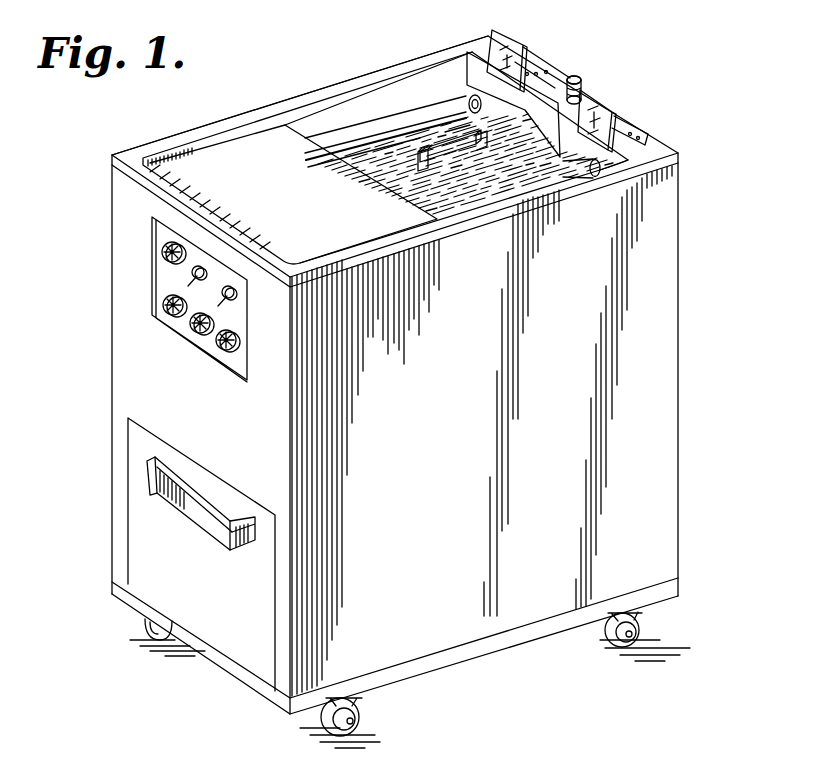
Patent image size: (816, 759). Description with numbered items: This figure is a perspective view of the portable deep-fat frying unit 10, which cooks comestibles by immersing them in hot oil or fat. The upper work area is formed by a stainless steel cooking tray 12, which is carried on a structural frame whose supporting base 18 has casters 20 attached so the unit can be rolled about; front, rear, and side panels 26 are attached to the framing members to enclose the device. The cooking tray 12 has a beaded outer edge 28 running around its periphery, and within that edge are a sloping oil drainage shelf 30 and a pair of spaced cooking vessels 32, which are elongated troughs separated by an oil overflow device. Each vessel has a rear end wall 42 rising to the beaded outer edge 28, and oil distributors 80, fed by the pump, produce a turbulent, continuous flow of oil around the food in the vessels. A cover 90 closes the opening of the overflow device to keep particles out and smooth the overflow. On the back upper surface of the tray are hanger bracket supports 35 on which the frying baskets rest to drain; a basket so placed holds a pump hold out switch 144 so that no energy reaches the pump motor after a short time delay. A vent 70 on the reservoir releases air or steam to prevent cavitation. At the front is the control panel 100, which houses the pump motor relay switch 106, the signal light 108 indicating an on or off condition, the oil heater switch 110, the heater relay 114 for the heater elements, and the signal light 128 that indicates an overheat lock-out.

The deep-fat frying unit 10 is at (693, 359).
The cooking tray 12 is at (313, 82).
The supporting base 18 is at (125, 596).
The casters 20 is at (147, 638).
The front, rear, and side panels 26 is at (306, 688).
The beaded outer edge 28 is at (136, 153).
The sloping oil drainage shelf 30 is at (239, 148).
The cooking vessels 32 is at (412, 94).
The hanger bracket supports 35 is at (510, 40).
The rear end wall 42 is at (525, 100).
The vent 70 is at (582, 81).
The oil distributors 80 is at (390, 133).
The cover 90 is at (383, 174).
The control panel 100 is at (236, 320).
The pump motor relay switch 106 is at (232, 284).
The signal light 108 is at (196, 334).
The oil heater switch 110 is at (204, 265).
The heater relay 114 is at (168, 312).
The signal light 128 is at (184, 242).
The pump hold out switch 144 is at (528, 52).